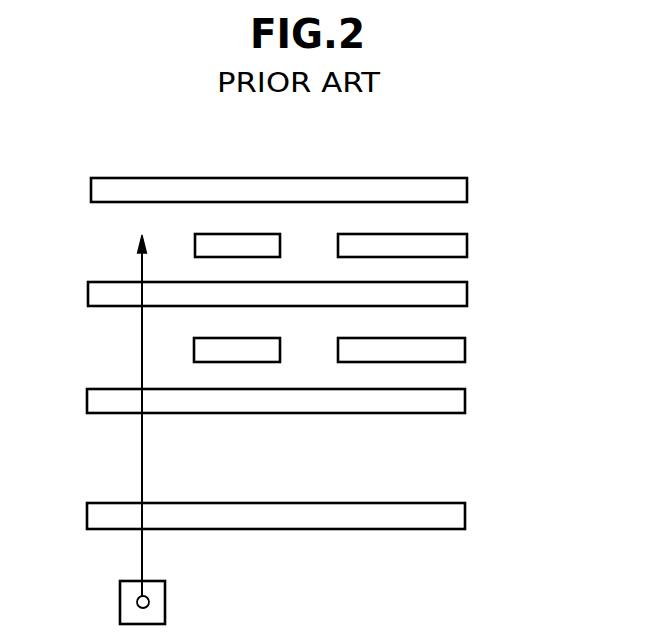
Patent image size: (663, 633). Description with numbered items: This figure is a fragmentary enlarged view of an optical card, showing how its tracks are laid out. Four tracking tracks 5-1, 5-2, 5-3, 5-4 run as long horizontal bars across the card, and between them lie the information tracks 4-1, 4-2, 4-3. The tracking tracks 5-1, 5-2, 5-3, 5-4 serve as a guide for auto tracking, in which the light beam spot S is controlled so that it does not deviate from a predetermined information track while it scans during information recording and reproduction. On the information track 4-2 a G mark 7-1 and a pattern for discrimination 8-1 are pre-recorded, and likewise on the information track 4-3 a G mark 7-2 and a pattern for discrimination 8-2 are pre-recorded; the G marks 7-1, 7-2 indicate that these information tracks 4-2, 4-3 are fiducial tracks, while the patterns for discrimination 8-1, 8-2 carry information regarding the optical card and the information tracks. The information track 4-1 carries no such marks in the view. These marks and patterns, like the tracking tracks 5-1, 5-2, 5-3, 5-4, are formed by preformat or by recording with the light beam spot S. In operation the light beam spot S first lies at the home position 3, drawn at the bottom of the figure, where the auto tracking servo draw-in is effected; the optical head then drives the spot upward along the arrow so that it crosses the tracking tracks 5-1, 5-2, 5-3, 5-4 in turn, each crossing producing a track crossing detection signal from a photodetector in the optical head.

The tracking track 5-1 is at (456, 516).
The tracking track 5-2 is at (456, 403).
The tracking track 5-3 is at (456, 296).
The tracking track 5-4 is at (456, 191).
The information track 4-1 is at (457, 458).
The information track 4-2 is at (376, 401).
The information track 4-3 is at (376, 196).
The G mark 7-1 is at (233, 363).
The G mark 7-2 is at (223, 235).
The pattern for discrimination 8-1 is at (383, 363).
The pattern for discrimination 8-2 is at (392, 234).
The home position 3 is at (165, 604).
The light beam spot S is at (120, 604).